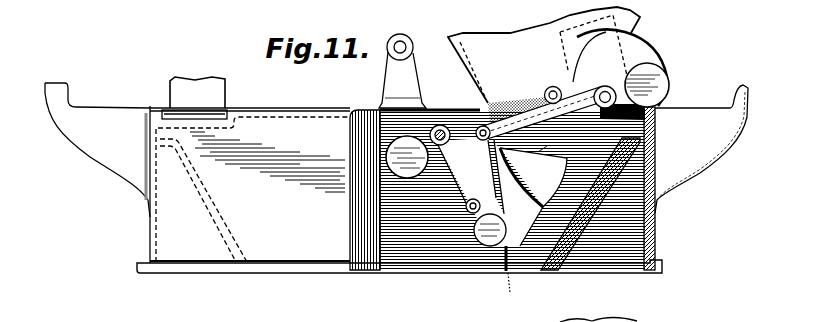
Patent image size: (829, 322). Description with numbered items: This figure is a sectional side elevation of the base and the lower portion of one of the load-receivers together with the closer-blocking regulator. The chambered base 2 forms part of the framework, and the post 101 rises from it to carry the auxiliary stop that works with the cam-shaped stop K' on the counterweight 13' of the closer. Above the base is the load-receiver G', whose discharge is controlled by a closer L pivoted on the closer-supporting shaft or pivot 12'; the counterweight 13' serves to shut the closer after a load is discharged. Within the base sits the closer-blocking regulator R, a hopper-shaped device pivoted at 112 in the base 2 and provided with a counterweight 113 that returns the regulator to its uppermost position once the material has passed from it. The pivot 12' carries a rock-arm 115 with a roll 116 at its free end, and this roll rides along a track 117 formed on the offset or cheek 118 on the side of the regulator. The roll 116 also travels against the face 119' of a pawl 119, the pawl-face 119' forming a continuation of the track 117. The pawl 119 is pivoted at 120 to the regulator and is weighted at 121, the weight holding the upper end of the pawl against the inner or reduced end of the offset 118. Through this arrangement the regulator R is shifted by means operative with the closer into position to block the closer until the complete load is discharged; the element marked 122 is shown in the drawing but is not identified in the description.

The chambered base 2 is at (253, 189).
The post 101 is at (392, 82).
The pivot 112 is at (439, 124).
The counterweight 113 is at (382, 167).
The rock-arm 115 is at (545, 100).
The roll 116 is at (480, 126).
The track 117 is at (554, 143).
The offset or cheek 118 is at (533, 177).
The pawl 119 is at (510, 177).
The pawl-face 119' is at (466, 172).
The pawl pivot 120 is at (471, 213).
The pawl weight 121 is at (490, 246).
The stop 122 is at (536, 212).
The load-receiver G' is at (544, 65).
The closer L is at (559, 91).
The closer-supporting shaft or pivot 12' is at (594, 70).
The cam-shaped stop K' is at (622, 64).
The counterweight 13' is at (664, 85).
The closer-blocking regulator R is at (529, 226).